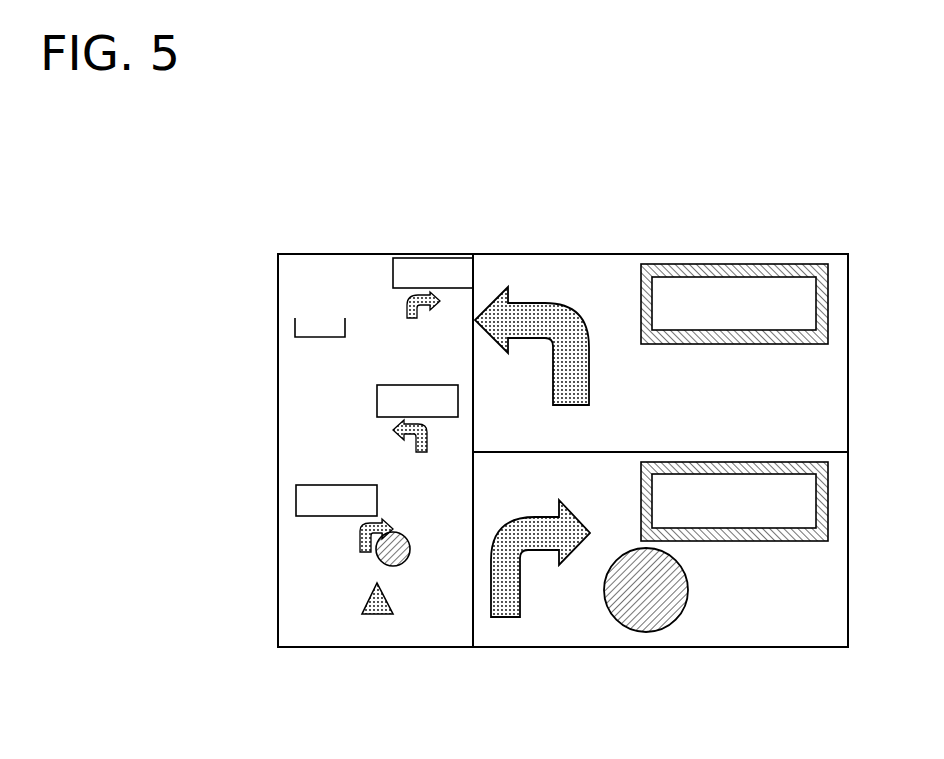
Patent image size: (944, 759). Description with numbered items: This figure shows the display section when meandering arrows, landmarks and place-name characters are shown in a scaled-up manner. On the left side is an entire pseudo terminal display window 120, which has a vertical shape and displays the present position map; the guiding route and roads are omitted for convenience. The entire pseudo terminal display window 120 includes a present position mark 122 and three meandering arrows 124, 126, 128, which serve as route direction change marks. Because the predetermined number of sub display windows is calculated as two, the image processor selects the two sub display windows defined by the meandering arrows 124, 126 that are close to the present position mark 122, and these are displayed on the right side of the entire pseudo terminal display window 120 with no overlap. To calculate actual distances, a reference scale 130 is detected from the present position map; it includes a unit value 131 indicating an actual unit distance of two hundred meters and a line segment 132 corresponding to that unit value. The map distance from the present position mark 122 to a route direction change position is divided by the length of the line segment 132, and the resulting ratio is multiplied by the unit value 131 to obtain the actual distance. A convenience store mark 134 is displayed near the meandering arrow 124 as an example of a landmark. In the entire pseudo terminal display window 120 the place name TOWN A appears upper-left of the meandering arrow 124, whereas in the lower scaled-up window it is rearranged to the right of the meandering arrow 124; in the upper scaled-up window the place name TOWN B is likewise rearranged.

The entire pseudo terminal display window 120 is at (383, 213).
The present position mark 122 is at (362, 600).
The meandering arrow 124 is at (360, 538).
The meandering arrow 126 is at (533, 303).
The meandering arrow 128 is at (405, 306).
The reference scale 130 is at (229, 302).
The unit value 131 is at (288, 300).
The line segment 132 is at (295, 328).
The convenience store mark 134 is at (405, 562).